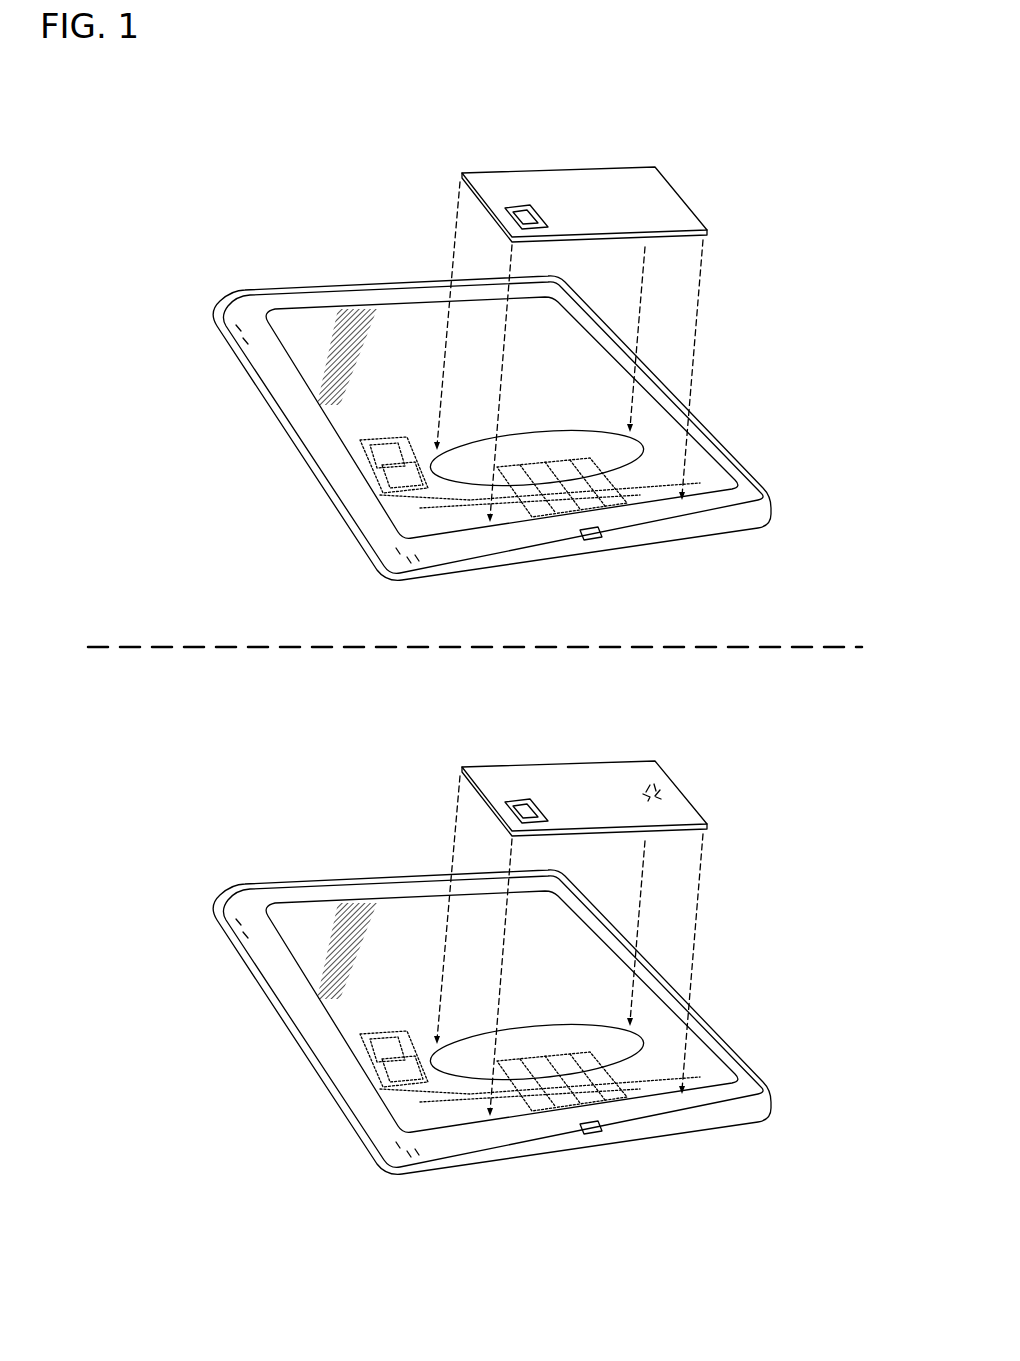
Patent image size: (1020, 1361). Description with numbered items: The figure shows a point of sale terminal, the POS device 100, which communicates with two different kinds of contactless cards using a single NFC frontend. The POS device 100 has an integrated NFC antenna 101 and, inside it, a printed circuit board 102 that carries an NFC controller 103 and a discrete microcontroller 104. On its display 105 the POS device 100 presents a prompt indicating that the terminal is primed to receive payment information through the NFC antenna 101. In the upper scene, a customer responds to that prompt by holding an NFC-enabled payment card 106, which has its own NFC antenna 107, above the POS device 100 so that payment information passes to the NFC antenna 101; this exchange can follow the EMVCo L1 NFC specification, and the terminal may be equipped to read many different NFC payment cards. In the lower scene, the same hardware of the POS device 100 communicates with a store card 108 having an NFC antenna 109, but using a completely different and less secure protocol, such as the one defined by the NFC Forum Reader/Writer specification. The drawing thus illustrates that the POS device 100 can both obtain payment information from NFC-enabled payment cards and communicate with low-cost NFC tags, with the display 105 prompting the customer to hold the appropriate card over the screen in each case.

The POS device 100 is at (222, 315).
The NFC antenna 101 is at (553, 517).
The printed circuit board 102 is at (355, 452).
The NFC controller 103 is at (370, 488).
The discrete microcontroller 104 is at (357, 482).
The display 105 is at (312, 314).
The NFC-enabled payment card 106 is at (485, 177).
The NFC antenna 107 is at (527, 210).
The store card 108 is at (487, 771).
The NFC antenna 109 is at (529, 804).